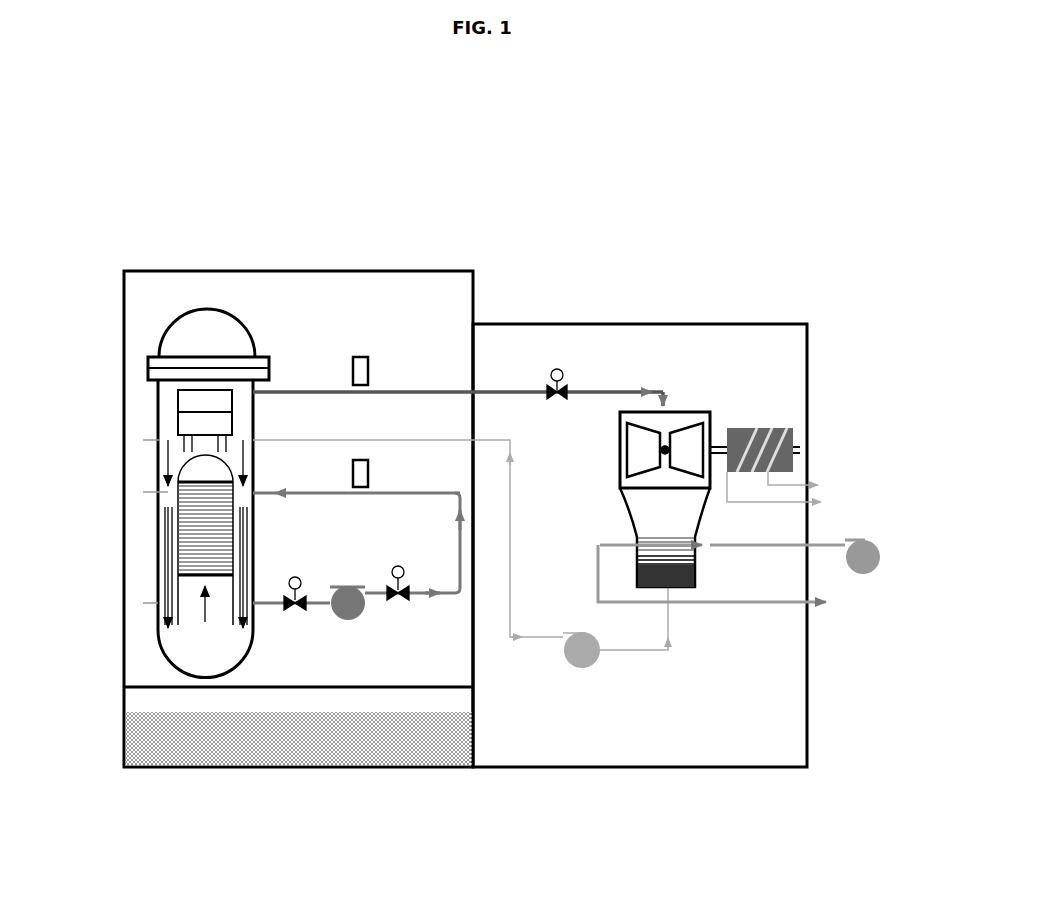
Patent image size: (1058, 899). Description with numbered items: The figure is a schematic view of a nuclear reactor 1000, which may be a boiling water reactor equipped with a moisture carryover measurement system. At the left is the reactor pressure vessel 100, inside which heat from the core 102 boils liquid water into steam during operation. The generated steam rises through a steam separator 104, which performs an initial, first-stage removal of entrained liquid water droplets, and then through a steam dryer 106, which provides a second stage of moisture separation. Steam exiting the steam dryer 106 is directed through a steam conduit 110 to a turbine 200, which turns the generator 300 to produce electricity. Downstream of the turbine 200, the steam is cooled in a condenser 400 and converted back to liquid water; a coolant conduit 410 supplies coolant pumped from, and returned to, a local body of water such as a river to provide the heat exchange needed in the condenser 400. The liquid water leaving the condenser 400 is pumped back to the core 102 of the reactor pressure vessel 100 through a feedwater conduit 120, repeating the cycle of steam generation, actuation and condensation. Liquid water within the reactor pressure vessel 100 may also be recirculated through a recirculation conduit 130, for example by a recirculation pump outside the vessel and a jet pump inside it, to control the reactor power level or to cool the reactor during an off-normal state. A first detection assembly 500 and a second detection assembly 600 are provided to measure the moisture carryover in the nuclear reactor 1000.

The nuclear reactor 1000 is at (448, 114).
The reactor pressure vessel 100 is at (170, 316).
The core 102 is at (190, 530).
The steam separator 104 is at (190, 422).
The steam dryer 106 is at (190, 402).
The steam conduit 110 is at (322, 392).
The feedwater conduit 120 is at (287, 440).
The recirculation conduit 130 is at (423, 593).
The turbine 200 is at (698, 400).
The generator 300 is at (781, 415).
The condenser 400 is at (706, 520).
The coolant conduit 410 is at (731, 604).
The first detection assembly 500 is at (369, 350).
The second detection assembly 600 is at (376, 452).